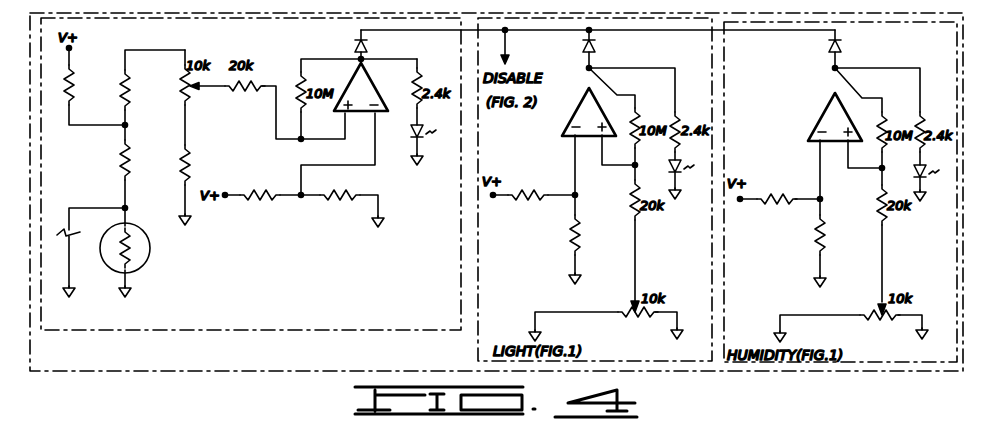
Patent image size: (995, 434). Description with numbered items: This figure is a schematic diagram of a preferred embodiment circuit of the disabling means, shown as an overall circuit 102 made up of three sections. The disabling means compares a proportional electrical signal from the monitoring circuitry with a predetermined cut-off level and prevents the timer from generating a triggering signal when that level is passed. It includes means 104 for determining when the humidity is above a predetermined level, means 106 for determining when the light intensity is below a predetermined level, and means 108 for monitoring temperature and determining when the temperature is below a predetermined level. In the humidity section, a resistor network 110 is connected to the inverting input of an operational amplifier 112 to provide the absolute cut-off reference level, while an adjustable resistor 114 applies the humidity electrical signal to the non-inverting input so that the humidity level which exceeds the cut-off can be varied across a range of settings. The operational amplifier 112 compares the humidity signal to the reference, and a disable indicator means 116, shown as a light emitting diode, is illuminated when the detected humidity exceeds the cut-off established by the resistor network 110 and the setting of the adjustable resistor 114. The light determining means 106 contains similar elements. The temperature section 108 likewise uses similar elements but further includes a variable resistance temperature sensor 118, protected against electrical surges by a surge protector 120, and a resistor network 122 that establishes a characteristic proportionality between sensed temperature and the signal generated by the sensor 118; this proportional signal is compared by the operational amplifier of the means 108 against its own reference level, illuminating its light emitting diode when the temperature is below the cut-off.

The sensor circuit assembly 102 is at (708, 12).
The humidity determining means 104 is at (724, 268).
The light intensity determining means 106 is at (478, 268).
The temperature monitoring and determining means 108 is at (418, 327).
The resistor network 110 is at (798, 214).
The operational amplifier 112 is at (823, 113).
The adjustable resistor 114 is at (882, 316).
The disable indicator means 116 is at (925, 181).
The variable resistance temperature sensor 118 is at (150, 252).
The surge protector 120 is at (70, 242).
The resistor network 122 is at (118, 136).